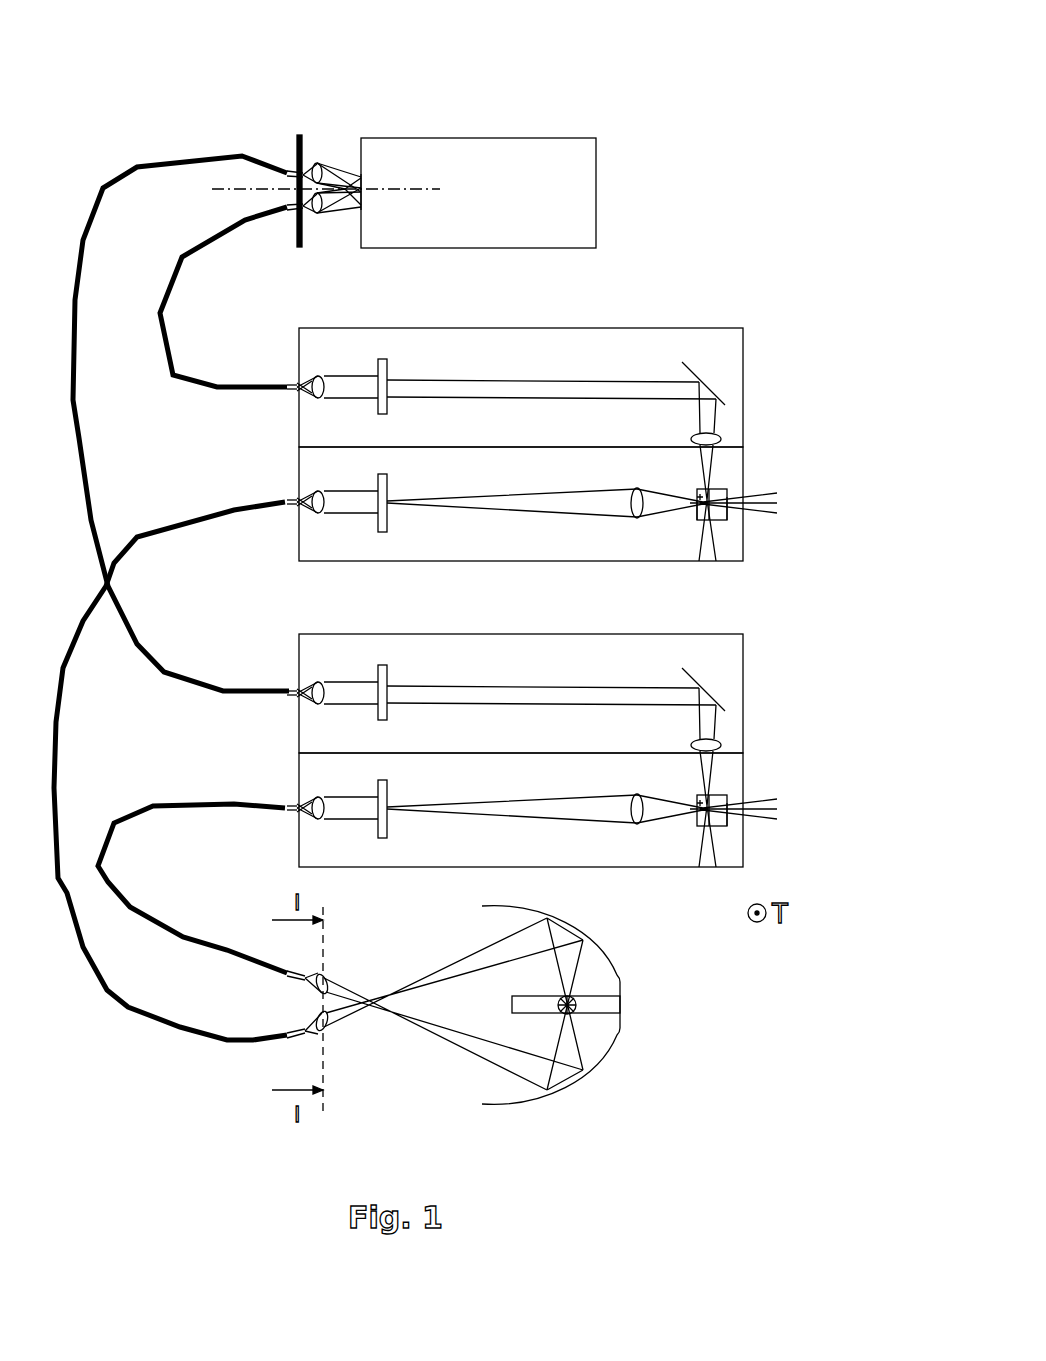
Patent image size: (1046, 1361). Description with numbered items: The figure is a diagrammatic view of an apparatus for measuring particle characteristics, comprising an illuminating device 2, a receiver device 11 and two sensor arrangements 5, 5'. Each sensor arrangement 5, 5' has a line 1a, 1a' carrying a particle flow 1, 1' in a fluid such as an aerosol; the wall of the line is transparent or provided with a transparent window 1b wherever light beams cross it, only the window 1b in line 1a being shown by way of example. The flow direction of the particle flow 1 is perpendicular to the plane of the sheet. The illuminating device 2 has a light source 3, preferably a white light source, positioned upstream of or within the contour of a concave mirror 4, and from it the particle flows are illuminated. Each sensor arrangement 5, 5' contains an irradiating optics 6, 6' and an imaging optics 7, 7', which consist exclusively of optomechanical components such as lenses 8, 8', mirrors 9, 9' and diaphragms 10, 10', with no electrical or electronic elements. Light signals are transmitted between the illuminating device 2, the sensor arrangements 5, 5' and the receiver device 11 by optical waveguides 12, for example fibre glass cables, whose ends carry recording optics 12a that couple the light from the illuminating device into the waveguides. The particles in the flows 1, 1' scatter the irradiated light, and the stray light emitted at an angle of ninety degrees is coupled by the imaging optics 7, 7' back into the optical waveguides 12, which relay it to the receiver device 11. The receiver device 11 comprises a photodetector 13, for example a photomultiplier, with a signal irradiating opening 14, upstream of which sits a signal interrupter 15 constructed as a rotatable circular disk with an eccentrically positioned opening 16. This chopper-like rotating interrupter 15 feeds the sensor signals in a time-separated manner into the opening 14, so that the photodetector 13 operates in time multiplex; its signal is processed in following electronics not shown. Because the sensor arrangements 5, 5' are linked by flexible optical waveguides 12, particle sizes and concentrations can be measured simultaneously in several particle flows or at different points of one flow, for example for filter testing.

The particle flow 1 is at (758, 467).
The line 1a is at (785, 520).
The transparent window 1b is at (695, 508).
The particle flow 1' is at (759, 773).
The line 1a' is at (782, 837).
The illuminating device 2 is at (635, 1085).
The light source 3 is at (577, 1018).
The concave mirror 4 is at (617, 968).
The sensor arrangement 5 is at (572, 441).
The sensor arrangement 5' is at (573, 746).
The irradiating optics 6 is at (532, 533).
The irradiating optics 6' is at (532, 831).
The imaging optics 7 is at (515, 355).
The imaging optics 7' is at (515, 668).
The lens 8 is at (666, 471).
The lens 8' is at (664, 777).
The mirror 9 is at (728, 351).
The mirror 9' is at (711, 654).
The diaphragm 10 is at (433, 445).
The diaphragm 10' is at (436, 751).
The receiver device 11 is at (460, 97).
The optical waveguide 12 is at (168, 275).
The recording optics 12a is at (310, 995).
The photodetector 13 is at (602, 195).
The signal irradiating opening 14 is at (365, 205).
The signal interrupter 15 is at (292, 150).
The eccentrically positioned opening 16 is at (262, 210).